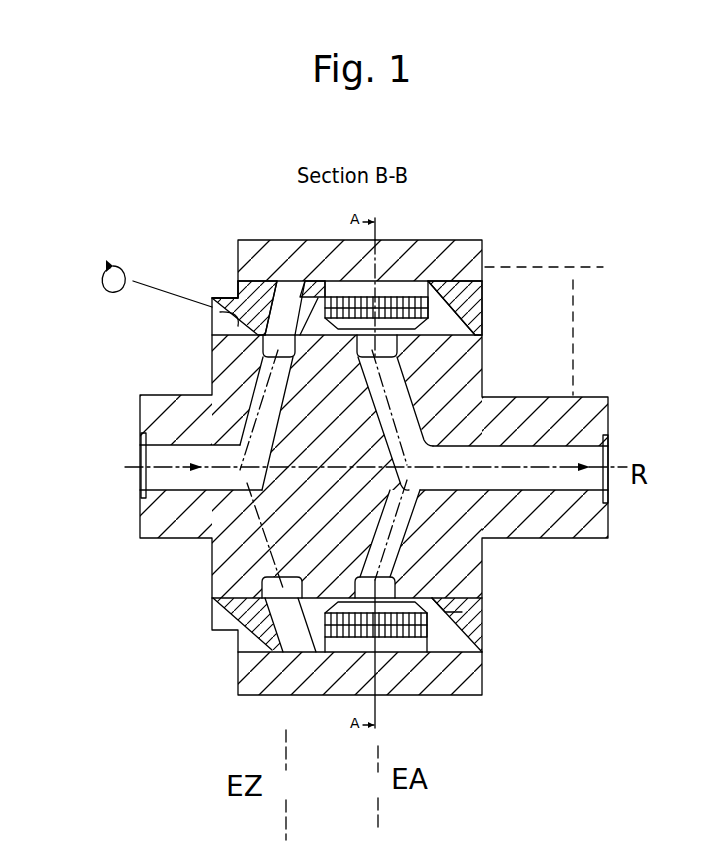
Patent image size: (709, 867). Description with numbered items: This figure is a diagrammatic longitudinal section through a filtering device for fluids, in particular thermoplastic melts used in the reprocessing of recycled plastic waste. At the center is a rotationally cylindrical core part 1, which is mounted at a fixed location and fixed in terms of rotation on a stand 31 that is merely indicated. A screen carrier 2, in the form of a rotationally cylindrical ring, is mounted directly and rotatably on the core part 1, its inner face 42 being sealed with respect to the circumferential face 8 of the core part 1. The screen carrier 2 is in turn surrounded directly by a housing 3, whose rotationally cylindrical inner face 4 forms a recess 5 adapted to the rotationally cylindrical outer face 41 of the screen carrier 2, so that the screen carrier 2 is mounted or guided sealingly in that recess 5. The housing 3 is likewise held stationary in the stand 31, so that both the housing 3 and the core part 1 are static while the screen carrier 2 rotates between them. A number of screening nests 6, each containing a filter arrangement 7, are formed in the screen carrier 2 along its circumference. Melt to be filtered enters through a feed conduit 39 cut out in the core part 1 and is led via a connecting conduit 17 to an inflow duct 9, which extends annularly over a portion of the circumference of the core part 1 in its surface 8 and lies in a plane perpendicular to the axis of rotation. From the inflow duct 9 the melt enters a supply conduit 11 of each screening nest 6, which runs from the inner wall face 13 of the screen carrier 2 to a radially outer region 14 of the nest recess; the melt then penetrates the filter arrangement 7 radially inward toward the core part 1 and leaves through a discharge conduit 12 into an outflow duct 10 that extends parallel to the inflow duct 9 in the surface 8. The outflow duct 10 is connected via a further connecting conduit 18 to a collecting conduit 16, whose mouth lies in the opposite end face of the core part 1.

The core part 1 is at (473, 383).
The screen carrier 2 is at (470, 313).
The housing 3 is at (485, 240).
The inner face 4 is at (440, 278).
The recess 5 is at (220, 279).
The screening nest 6 is at (428, 652).
The filter arrangement 7 is at (347, 637).
The circumferential face 8 is at (224, 345).
The inflow duct 9 is at (280, 345).
The outflow duct 10 is at (362, 358).
The supply conduit 11 is at (295, 620).
The discharge conduit 12 is at (467, 618).
The inner wall face 13 is at (467, 608).
The radially outer region 14 is at (398, 640).
The collecting conduit 16 is at (593, 453).
The connecting conduit 17 is at (273, 395).
The connecting conduit 18 is at (385, 405).
The stand 31 is at (561, 327).
The feed conduit 39 is at (182, 478).
The outer face 41 is at (472, 291).
The inner face 42 is at (212, 315).